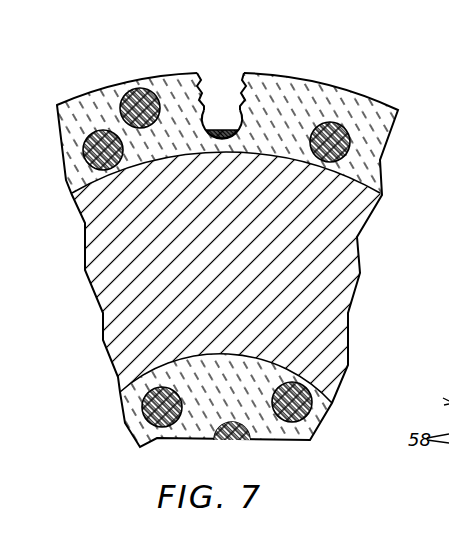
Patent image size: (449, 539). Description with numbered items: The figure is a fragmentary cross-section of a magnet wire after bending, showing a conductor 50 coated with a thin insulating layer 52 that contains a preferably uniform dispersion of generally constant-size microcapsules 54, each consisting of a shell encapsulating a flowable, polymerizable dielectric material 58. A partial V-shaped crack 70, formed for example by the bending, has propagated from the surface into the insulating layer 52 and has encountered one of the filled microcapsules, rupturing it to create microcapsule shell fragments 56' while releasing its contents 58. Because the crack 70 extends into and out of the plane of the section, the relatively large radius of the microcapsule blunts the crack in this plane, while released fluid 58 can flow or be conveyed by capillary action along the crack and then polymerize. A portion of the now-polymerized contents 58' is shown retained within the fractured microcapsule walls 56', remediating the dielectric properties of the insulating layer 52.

The conductor 50 is at (348, 252).
The insulating layer 52 is at (373, 142).
The microcapsules 54 is at (344, 128).
The polymerizable material 58 is at (80, 132).
The microcapsule shell fragments 56' is at (231, 84).
The polymerized microcapsule contents 58' is at (195, 82).
The crack 70 is at (222, 127).